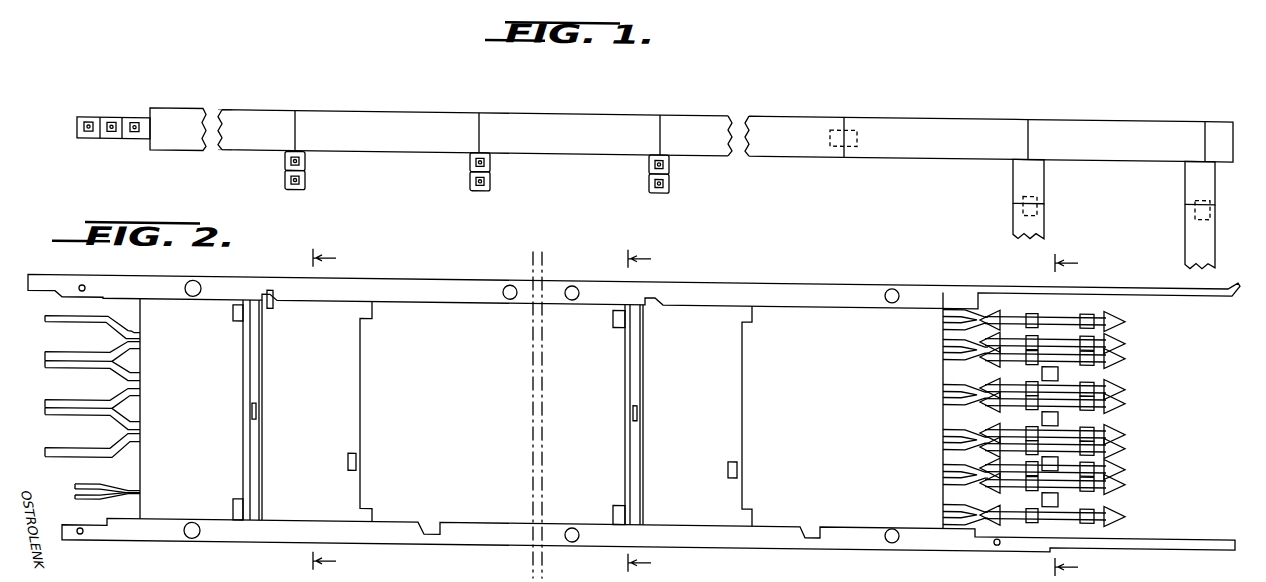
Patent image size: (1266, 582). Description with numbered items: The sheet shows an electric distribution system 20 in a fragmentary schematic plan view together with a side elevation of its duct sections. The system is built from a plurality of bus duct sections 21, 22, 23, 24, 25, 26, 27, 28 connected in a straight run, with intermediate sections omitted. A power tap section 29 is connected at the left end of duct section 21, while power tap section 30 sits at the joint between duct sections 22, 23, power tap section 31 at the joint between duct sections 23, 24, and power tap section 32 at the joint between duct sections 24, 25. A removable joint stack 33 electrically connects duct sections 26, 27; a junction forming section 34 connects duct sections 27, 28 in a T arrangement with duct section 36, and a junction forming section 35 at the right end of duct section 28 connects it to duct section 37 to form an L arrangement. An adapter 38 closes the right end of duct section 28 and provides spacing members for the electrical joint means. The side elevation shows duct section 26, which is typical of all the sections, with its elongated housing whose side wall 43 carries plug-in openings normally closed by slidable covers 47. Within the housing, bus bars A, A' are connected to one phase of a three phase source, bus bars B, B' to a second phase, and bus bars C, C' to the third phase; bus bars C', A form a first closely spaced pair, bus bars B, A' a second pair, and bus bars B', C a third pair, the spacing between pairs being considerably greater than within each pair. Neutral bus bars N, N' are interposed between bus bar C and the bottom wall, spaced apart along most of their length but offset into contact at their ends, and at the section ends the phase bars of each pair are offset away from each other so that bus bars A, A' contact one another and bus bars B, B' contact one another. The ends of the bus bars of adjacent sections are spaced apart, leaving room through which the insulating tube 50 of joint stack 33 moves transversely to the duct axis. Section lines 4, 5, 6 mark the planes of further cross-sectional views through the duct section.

In FIG. 1, the electric distribution system 20 is at (766, 51).
In FIG. 1, the bus duct section 21 is at (172, 107).
In FIG. 1, the bus duct section 22 is at (252, 107).
In FIG. 1, the bus duct section 23 is at (388, 108).
In FIG. 1, the bus duct section 24 is at (565, 108).
In FIG. 1, the bus duct section 25 is at (693, 108).
In FIG. 1, the bus duct section 26 is at (778, 108).
In FIG. 2, the bus duct section 26 is at (795, 259).
In FIG. 1, the bus duct section 27 is at (915, 108).
In FIG. 1, the bus duct section 28 is at (1118, 106).
In FIG. 1, the power tap section 29 is at (92, 116).
In FIG. 1, the power tap section 30 is at (306, 168).
In FIG. 1, the power tap section 31 is at (492, 167).
In FIG. 1, the power tap section 32 is at (672, 166).
In FIG. 1, the removable joint stack 33 is at (857, 114).
In FIG. 2, the removable joint stack 33 is at (1129, 376).
In FIG. 1, the junction forming section 34 is at (1012, 175).
In FIG. 1, the junction forming section 35 is at (1186, 171).
In FIG. 1, the duct section 36 is at (1012, 214).
In FIG. 1, the duct section 37 is at (1185, 224).
In FIG. 1, the adapter 38 is at (1212, 106).
In FIG. 2, the side wall 43 is at (497, 385).
In FIG. 2, the slidable cover 47 is at (362, 384).
In FIG. 2, the insulating tube 50 is at (1100, 358).
In FIG. 2, the section line 4- 4 is at (314, 411).
In FIG. 2, the section line 5- 5 is at (628, 411).
In FIG. 1, the section line 6- 6 is at (1055, 264).
In FIG. 2, the section line 6- 6 is at (1055, 568).
In FIG. 2, the bus bar A is at (80, 348).
In FIG. 2, the bus bar A' is at (79, 376).
In FIG. 2, the bus bar B is at (92, 394).
In FIG. 2, the bus bar B' is at (92, 425).
In FIG. 2, the bus bar C is at (79, 452).
In FIG. 2, the bus bar C' is at (79, 317).
In FIG. 2, the neutral bus bar N is at (106, 478).
In FIG. 2, the neutral bus bar N' is at (107, 503).